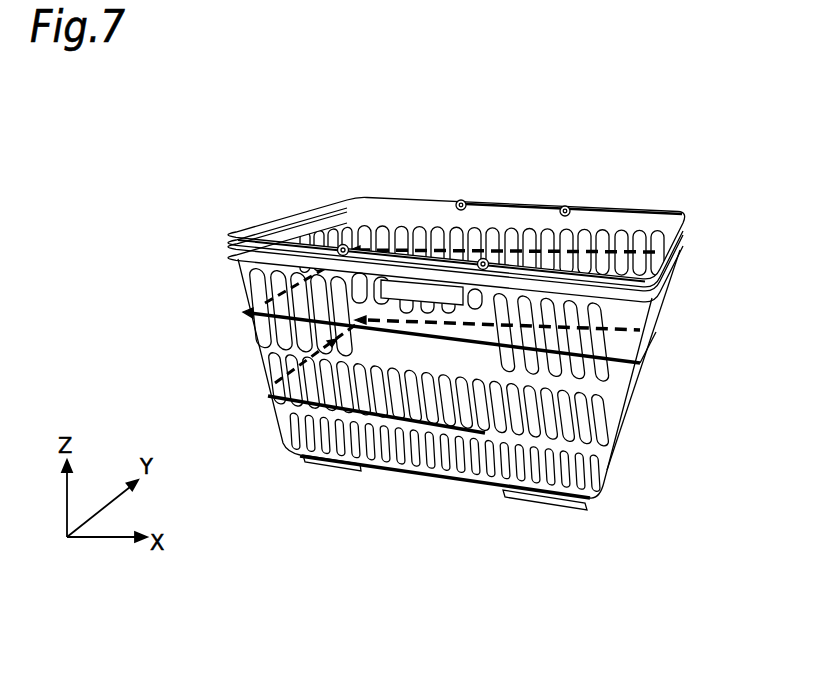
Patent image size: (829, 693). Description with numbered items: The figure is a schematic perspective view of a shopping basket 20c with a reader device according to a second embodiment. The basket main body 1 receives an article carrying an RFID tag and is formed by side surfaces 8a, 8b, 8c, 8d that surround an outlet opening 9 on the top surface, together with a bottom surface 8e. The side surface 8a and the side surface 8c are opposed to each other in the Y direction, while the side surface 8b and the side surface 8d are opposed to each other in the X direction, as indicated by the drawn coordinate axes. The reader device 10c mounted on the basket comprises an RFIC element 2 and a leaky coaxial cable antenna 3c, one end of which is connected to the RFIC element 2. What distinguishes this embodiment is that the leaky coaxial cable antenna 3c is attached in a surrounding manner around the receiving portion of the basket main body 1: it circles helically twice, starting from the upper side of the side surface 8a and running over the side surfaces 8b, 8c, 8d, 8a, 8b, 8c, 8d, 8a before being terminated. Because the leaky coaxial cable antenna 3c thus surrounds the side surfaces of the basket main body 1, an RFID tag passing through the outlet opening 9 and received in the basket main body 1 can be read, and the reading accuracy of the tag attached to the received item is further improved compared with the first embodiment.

The shopping basket with a reader device 20c is at (771, 59).
The basket main body 1 is at (267, 224).
The RFIC element 2 is at (424, 290).
The leaky coaxial cable antenna 3c is at (490, 296).
The reader device 10c is at (516, 103).
The outlet opening 9 is at (598, 213).
The side surface 8c is at (663, 233).
The side surface 8d is at (290, 344).
The side surface 8b is at (638, 396).
The bottom surface 8e is at (423, 437).
The side surface 8a is at (521, 463).